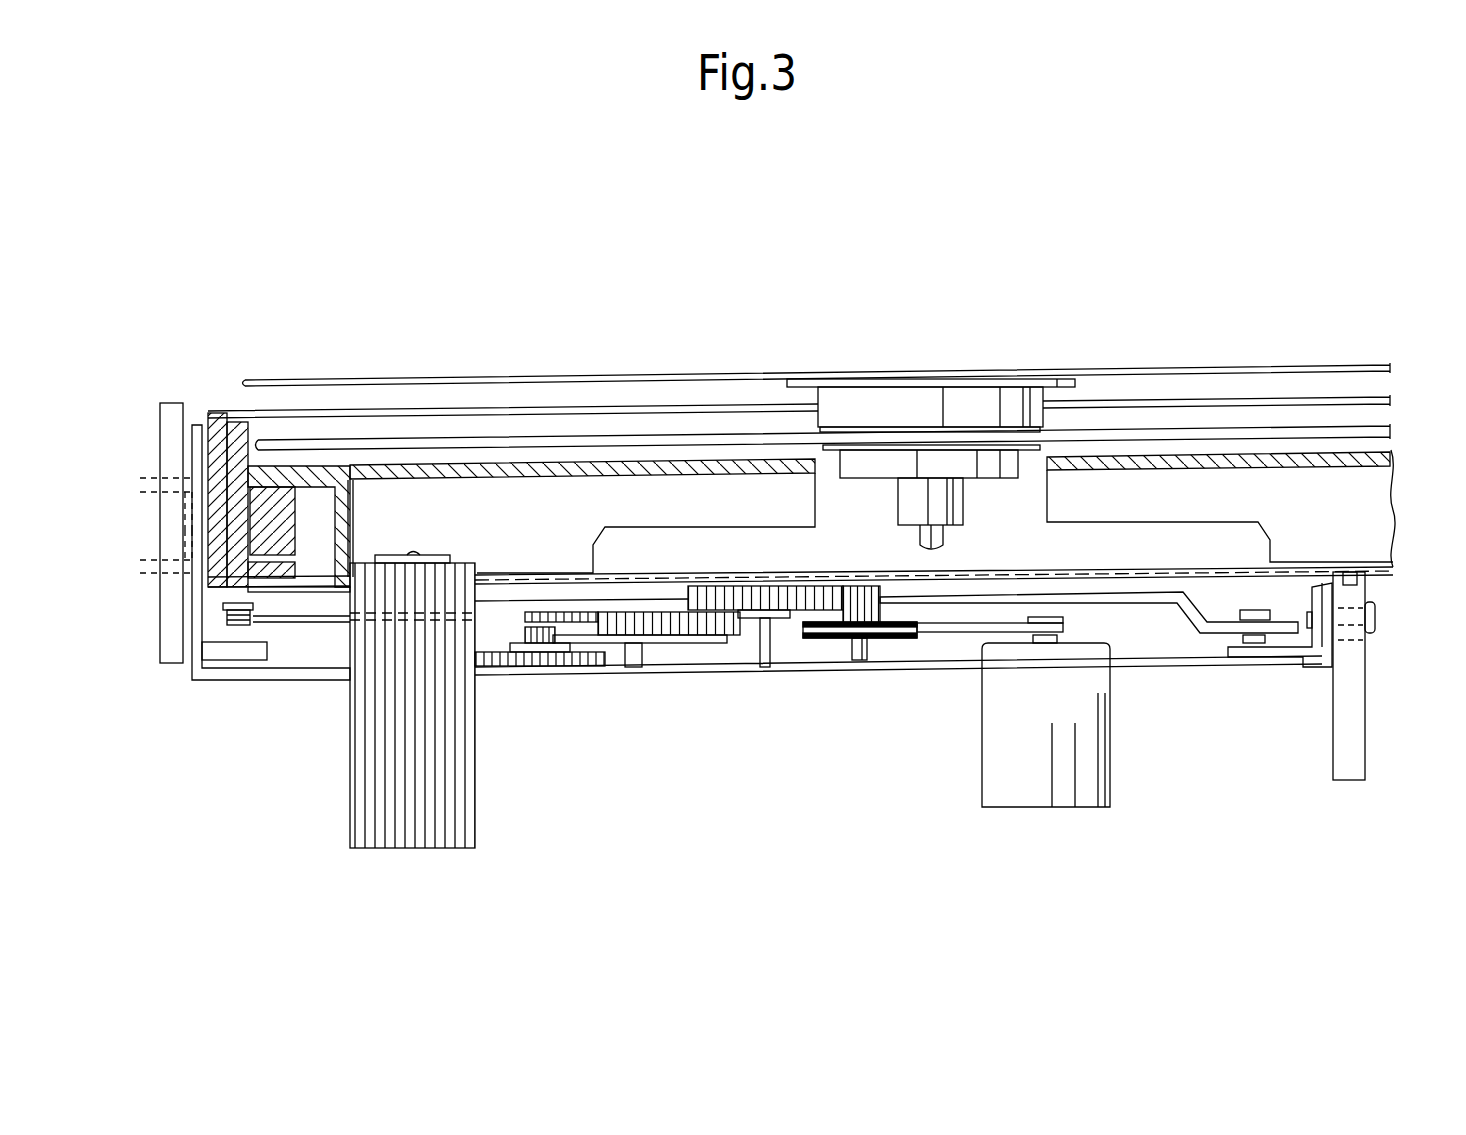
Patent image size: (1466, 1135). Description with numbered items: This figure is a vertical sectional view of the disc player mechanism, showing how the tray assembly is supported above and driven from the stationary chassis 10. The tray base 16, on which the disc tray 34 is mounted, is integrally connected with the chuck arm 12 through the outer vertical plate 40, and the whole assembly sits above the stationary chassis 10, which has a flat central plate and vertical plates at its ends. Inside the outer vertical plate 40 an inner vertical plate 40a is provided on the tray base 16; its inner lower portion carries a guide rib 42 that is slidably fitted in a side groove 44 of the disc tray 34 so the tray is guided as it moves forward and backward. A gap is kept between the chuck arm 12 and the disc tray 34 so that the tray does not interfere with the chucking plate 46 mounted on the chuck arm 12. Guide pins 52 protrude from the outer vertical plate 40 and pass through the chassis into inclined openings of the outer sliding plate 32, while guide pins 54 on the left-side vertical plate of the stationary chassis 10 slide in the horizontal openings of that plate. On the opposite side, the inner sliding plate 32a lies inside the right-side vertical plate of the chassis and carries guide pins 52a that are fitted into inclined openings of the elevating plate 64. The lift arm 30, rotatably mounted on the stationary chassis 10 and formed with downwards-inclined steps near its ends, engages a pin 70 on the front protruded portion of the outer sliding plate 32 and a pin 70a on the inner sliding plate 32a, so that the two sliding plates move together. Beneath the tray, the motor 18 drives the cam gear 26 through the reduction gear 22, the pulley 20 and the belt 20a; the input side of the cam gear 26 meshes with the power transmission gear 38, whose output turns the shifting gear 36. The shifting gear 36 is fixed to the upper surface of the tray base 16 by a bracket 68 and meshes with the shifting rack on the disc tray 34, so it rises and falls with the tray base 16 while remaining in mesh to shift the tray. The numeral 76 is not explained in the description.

The stationary chassis 10 is at (277, 677).
The chuck arm 12 is at (488, 411).
The tray base 16 is at (545, 577).
The motor 18 is at (1093, 777).
The pulley 20 is at (835, 640).
The belt 20a is at (963, 633).
The reduction gear 22 is at (793, 588).
The cam gear 26 is at (678, 626).
The lift arm 30 is at (913, 600).
The outer sliding plate 32 is at (173, 408).
The inner sliding plate 32a is at (1305, 657).
The disc tray 34 is at (326, 477).
The shifting gear 36 is at (457, 810).
The power transmission gear 38 is at (567, 660).
The outer vertical plate 40 is at (208, 432).
The inner vertical plate 40a is at (238, 430).
The guide rib 42 is at (270, 545).
The side groove 44 is at (265, 553).
The chucking plate 46 is at (643, 378).
The guide pins 52 is at (163, 570).
The guide pins 52a is at (1347, 612).
The guide pins 54 is at (162, 488).
The elevating plate 64 is at (1347, 760).
The bracket 68 is at (437, 555).
The pin 70 is at (222, 607).
The pin 70a is at (871, 513).
The lower rail 76 is at (1197, 432).